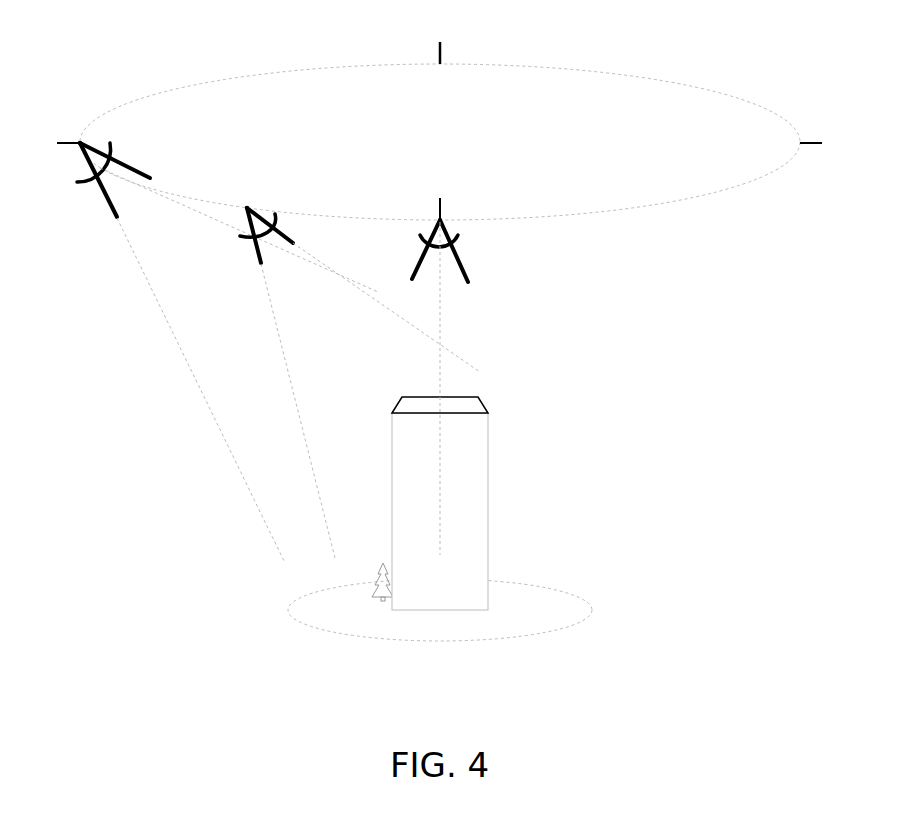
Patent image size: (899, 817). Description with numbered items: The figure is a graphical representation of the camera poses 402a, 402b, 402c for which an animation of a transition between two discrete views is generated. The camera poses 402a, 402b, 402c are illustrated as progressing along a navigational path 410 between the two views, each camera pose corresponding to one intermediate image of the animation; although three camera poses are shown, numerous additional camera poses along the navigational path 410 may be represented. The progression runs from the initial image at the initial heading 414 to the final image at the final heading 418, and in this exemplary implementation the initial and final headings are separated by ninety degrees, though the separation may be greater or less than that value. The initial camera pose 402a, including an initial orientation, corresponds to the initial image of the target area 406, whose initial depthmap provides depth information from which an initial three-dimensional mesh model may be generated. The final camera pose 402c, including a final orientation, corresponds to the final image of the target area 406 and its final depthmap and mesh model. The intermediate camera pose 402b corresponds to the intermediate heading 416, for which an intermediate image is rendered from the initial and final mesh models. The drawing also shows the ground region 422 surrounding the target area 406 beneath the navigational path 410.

The initial camera pose 402a is at (116, 186).
The intermediate camera pose 402b is at (268, 212).
The final camera pose 402c is at (433, 228).
The target area 406 is at (490, 476).
The navigational path 410 is at (617, 210).
The initial heading 414 is at (80, 142).
The intermediate heading 416 is at (247, 208).
The final heading 418 is at (440, 220).
The ground area 422 is at (537, 635).